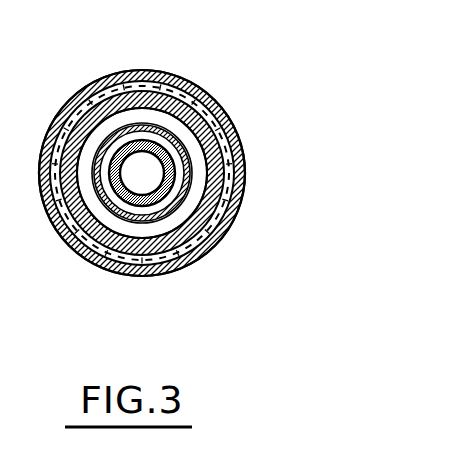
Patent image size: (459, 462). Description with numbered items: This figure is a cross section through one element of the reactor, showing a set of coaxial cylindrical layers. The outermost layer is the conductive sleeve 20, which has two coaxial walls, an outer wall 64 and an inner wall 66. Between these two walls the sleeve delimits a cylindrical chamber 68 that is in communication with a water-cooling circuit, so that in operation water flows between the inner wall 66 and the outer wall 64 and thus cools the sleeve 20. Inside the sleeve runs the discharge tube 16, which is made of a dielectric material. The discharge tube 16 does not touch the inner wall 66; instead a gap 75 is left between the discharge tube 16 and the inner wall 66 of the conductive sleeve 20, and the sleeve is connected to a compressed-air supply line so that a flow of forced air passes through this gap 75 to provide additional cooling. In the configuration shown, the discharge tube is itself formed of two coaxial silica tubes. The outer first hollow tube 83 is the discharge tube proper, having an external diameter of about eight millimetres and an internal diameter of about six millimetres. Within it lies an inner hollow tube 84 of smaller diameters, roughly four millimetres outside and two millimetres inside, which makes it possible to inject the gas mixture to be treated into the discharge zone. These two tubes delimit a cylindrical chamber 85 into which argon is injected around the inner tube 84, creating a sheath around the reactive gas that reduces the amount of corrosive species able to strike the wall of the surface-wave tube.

The discharge tube 16 is at (76, 245).
The sleeve 20 is at (240, 145).
The outer wall 64 is at (203, 93).
The inner wall 66 is at (155, 95).
The cylindrical chamber 68 is at (232, 175).
The gap 75 is at (167, 211).
The outer first hollow tube 83 is at (147, 206).
The inner hollow tube 84 is at (178, 237).
The cylindrical chamber 85 is at (107, 143).